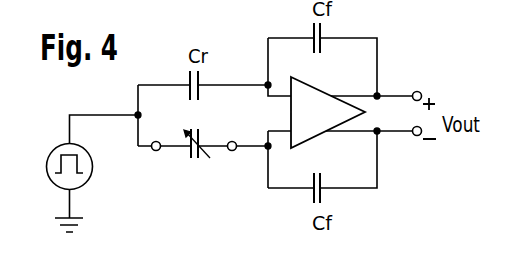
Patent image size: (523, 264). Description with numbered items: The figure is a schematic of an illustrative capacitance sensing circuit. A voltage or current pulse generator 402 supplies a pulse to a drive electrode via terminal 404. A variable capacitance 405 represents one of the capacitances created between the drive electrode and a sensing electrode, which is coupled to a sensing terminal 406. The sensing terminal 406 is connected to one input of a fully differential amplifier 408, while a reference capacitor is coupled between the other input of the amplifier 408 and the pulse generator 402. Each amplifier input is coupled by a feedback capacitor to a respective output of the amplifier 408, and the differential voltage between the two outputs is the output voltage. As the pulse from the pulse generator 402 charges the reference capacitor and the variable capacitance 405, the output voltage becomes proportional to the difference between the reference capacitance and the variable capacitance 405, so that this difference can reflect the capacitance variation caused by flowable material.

The pulse generator 402 is at (51, 152).
The terminal 404 is at (154, 151).
The variable capacitance 405 is at (195, 160).
The sensing terminal 406 is at (231, 151).
The fully differential amplifier 408 is at (319, 90).